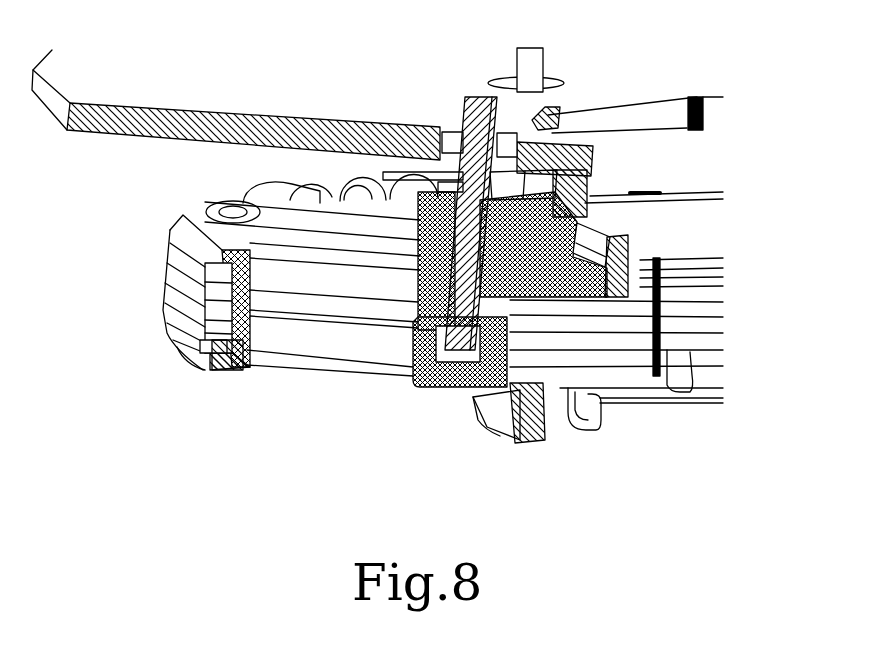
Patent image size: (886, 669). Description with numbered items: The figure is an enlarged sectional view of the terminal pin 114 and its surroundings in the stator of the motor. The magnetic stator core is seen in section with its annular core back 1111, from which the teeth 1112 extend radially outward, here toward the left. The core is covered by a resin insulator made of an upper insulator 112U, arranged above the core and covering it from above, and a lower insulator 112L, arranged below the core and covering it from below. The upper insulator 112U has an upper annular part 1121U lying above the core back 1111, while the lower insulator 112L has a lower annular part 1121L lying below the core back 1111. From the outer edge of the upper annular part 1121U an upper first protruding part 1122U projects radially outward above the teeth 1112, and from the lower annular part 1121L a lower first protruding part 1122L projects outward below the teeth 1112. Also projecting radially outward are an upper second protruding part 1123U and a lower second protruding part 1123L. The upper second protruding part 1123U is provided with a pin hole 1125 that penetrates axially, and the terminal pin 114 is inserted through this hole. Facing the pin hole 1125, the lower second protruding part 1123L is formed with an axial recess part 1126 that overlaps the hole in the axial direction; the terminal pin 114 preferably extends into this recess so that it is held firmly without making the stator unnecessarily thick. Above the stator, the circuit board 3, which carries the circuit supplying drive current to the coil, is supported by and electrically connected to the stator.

The circuit board 3 is at (242, 103).
The terminal pin 114 is at (477, 97).
The upper second protruding part 1123U is at (530, 180).
The upper first protruding part 1122U is at (280, 237).
The upper annular part 1121U is at (593, 223).
The upper insulator 112U is at (641, 233).
The core back 1111 is at (627, 337).
The teeth 1112 is at (197, 295).
The lower first protruding part 1122L is at (290, 360).
The axial recess part 1126 is at (400, 378).
The lower second protruding part 1123L is at (435, 388).
The lower insulator 112L is at (552, 396).
The pin hole 1125 is at (555, 300).
The lower annular part 1121L is at (540, 413).